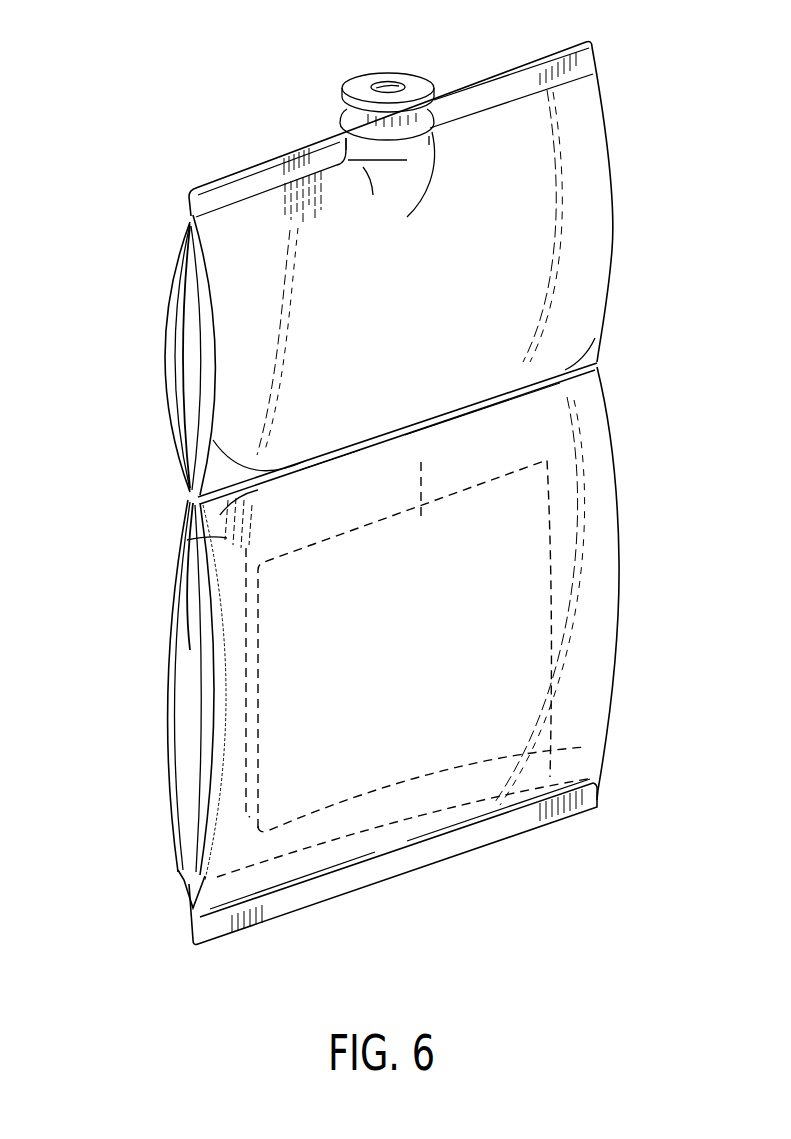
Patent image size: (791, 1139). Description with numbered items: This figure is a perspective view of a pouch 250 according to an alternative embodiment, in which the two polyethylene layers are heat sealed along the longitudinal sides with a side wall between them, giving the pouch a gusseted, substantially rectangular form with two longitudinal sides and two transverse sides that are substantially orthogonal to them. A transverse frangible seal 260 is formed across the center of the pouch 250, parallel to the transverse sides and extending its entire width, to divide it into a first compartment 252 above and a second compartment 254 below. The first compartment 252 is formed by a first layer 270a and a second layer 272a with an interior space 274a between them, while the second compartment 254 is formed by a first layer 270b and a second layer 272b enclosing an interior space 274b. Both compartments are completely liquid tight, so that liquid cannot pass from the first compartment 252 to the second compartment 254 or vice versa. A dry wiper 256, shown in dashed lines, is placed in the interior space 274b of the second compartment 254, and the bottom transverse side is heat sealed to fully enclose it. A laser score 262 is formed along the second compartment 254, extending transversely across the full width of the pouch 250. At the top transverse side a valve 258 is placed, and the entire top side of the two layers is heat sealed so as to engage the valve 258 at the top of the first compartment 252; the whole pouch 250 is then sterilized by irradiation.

The pouch 250 is at (143, 96).
The first compartment 252 is at (217, 247).
The second compartment 254 is at (185, 547).
The dry wiper 256 is at (421, 470).
The valve 258 is at (416, 80).
The frangible seal 260 is at (332, 417).
The laser score 262 is at (588, 746).
The first layer 270a is at (172, 314).
The second layer 272a is at (210, 353).
The interior space 274a is at (190, 398).
The first layer 270b is at (170, 678).
The second layer 272b is at (207, 718).
The interior space 274b is at (193, 767).